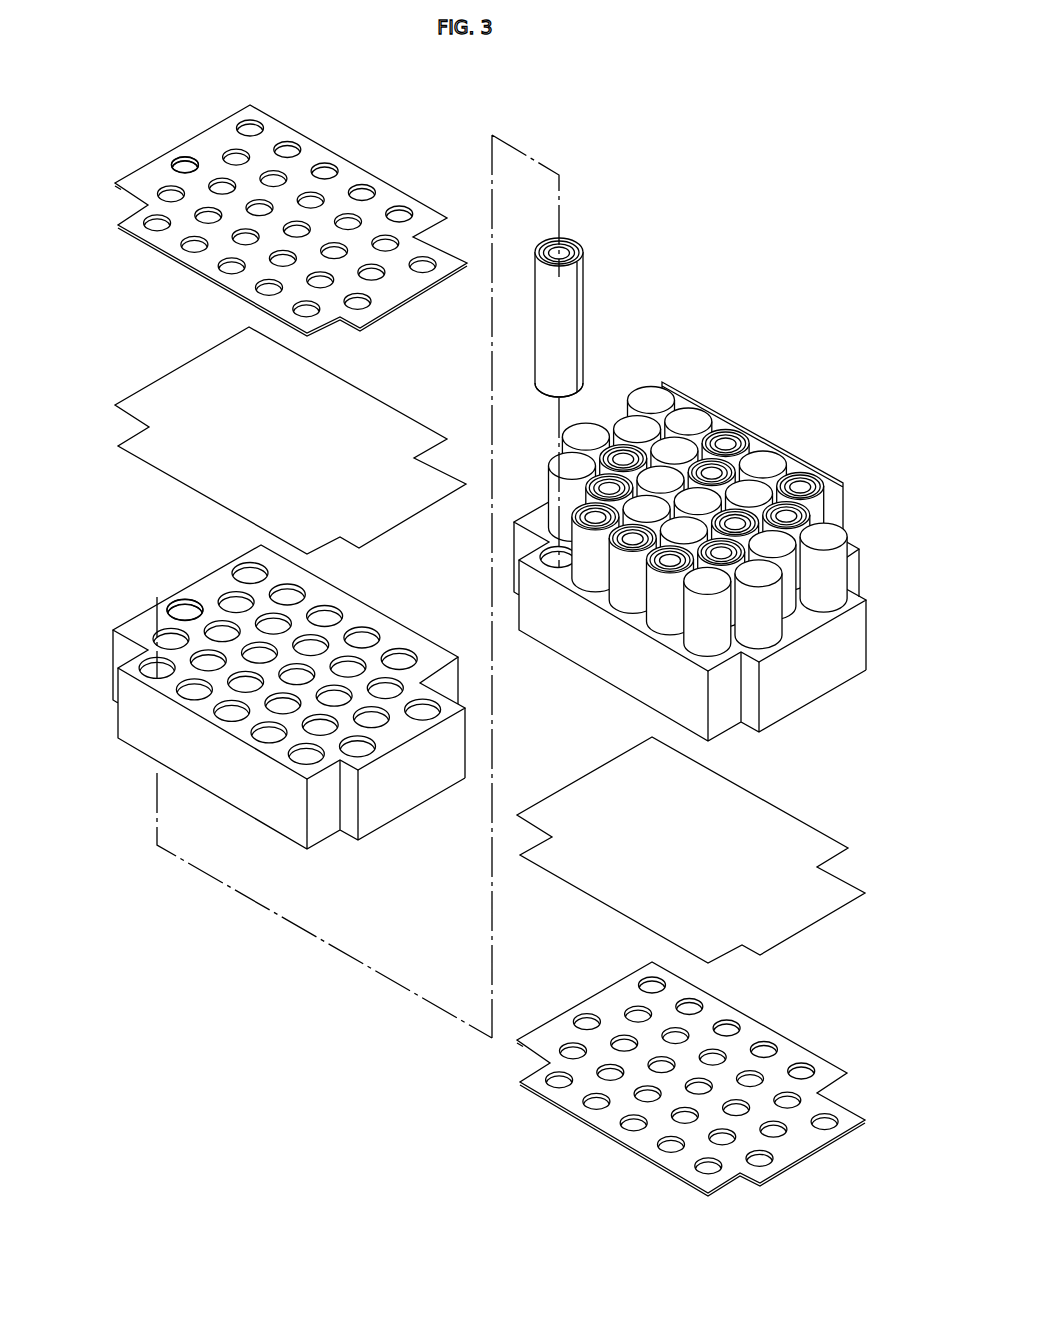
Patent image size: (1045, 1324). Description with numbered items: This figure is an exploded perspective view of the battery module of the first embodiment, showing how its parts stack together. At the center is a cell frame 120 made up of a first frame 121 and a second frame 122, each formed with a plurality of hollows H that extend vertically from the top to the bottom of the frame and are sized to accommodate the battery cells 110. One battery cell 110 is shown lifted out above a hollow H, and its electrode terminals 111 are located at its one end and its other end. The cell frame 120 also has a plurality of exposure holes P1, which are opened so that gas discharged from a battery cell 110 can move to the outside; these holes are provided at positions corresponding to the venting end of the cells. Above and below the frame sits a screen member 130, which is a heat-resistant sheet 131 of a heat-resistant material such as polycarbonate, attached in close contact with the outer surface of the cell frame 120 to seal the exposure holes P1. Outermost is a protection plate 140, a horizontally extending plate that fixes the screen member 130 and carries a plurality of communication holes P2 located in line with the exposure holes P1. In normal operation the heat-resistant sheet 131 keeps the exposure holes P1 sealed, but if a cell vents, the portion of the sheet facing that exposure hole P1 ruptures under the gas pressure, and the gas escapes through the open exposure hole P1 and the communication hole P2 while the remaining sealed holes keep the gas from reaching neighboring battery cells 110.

The battery cell 110 is at (691, 436).
The electrode terminal 111 is at (563, 247).
The cell frame 120 is at (489, 615).
The first frame 121 is at (358, 610).
The second frame 122 is at (653, 561).
The screen member 130 is at (489, 636).
The heat-resistant sheet 131 is at (150, 385).
The protection plate 140 is at (150, 163).
The hollow H is at (551, 562).
The exposure hole P1 is at (176, 602).
The communication hole P2 is at (185, 157).